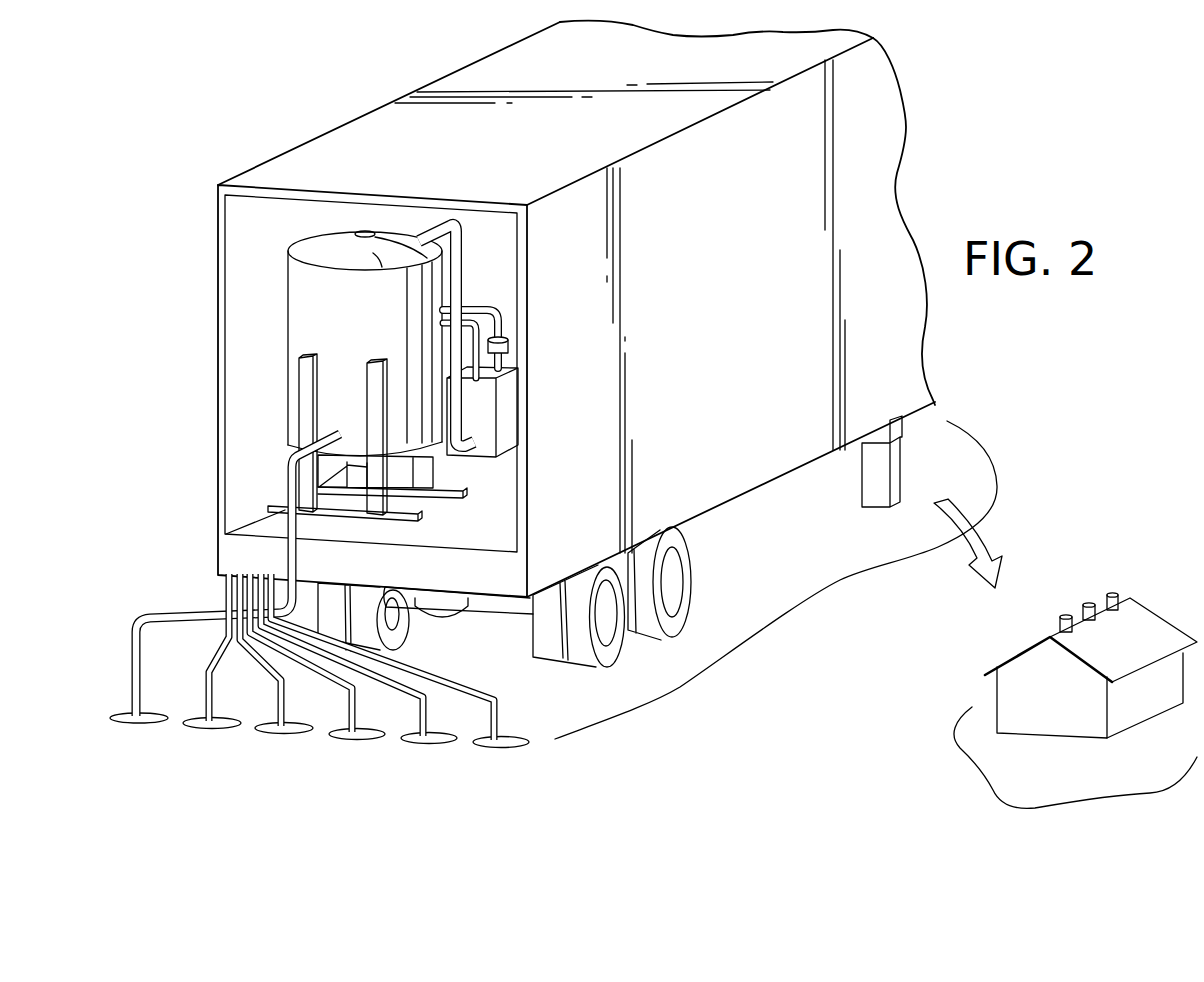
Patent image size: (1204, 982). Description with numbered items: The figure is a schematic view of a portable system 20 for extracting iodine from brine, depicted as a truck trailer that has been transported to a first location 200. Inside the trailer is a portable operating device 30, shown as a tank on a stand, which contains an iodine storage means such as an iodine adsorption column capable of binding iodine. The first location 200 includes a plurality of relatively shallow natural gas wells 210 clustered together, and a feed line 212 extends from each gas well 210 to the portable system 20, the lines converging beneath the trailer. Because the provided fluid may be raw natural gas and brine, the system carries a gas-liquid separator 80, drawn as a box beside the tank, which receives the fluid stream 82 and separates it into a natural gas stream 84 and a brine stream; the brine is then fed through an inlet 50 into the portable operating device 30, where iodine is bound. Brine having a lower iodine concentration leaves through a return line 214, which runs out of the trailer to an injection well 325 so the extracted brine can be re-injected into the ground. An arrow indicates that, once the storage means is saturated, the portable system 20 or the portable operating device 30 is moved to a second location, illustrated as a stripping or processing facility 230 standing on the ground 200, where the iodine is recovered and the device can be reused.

The portable system 20 is at (298, 170).
The portable operating device 30 is at (290, 343).
The inlet 50 is at (421, 238).
The gas-liquid separator 80 is at (505, 413).
The fluid stream 82 is at (493, 308).
The natural gas stream 84 is at (479, 338).
The first location 200 is at (810, 553).
The natural gas wells 210 is at (228, 727).
The feed line 212 is at (211, 727).
The return line 214 is at (287, 530).
The stripping or processing facility 230 is at (1074, 706).
The injection well 325 is at (145, 721).